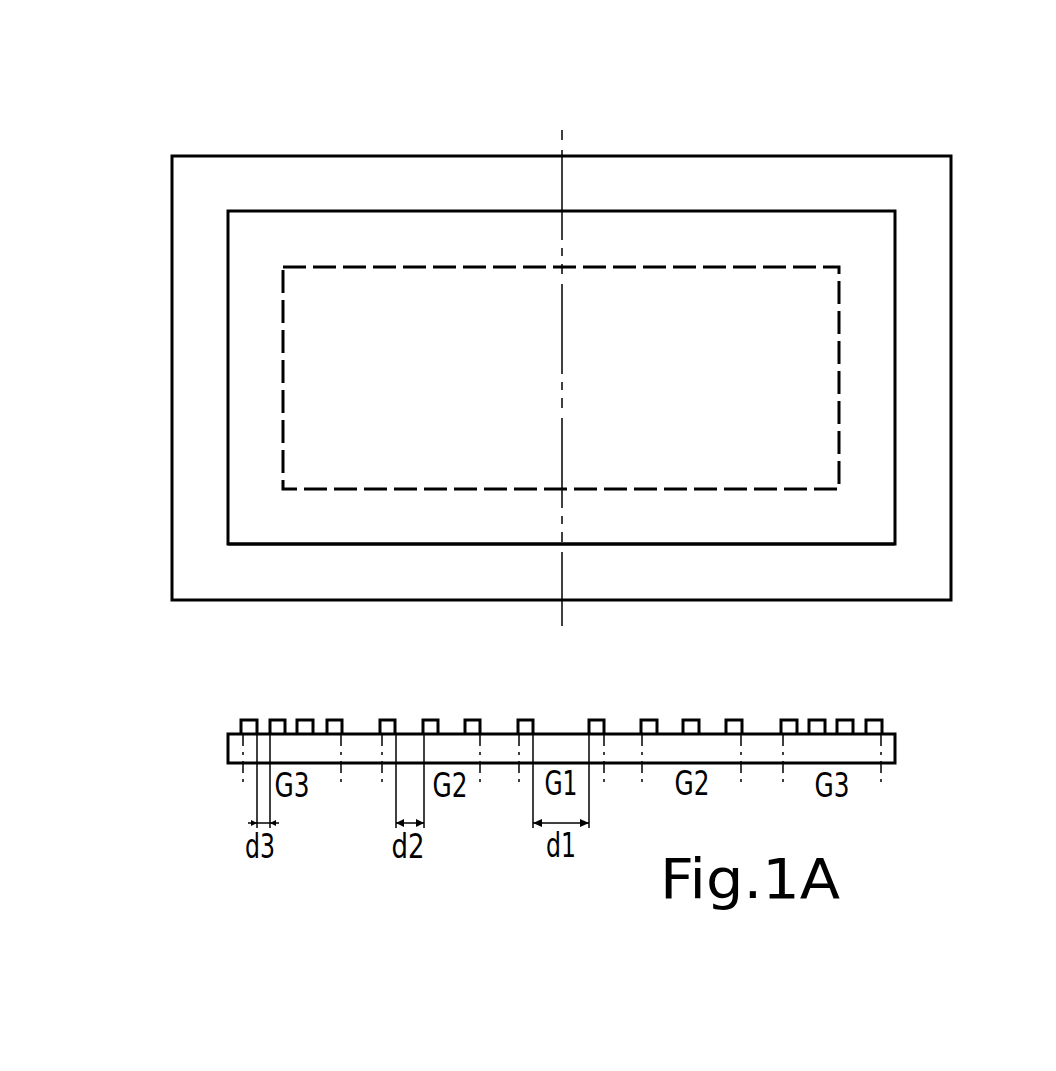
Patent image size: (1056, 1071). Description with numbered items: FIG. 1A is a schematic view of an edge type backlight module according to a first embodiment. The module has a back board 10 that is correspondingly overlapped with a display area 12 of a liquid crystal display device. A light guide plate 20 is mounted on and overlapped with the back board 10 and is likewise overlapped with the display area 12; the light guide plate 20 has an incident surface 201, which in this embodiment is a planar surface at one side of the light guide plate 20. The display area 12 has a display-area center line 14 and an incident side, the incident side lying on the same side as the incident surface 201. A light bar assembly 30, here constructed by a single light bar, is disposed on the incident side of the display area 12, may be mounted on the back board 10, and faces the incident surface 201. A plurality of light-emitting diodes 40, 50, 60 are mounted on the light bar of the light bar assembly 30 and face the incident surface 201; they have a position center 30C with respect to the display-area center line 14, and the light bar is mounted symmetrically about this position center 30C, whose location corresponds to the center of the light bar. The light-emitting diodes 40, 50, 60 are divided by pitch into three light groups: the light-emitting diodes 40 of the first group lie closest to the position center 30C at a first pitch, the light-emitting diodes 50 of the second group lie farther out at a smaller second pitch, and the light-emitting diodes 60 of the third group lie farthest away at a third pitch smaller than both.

The back board 10 is at (788, 156).
The display area 12 is at (623, 267).
The display-area center line 14 is at (562, 153).
The light guide plate 20 is at (707, 211).
The incident surface 201 is at (870, 546).
The light bar assembly 30 is at (903, 749).
The position center 30C is at (562, 733).
The light-emitting diodes of the first light group 40 is at (525, 722).
The light-emitting diodes of the second light group 50 is at (472, 720).
The light-emitting diodes of the third light group 60 is at (334, 720).